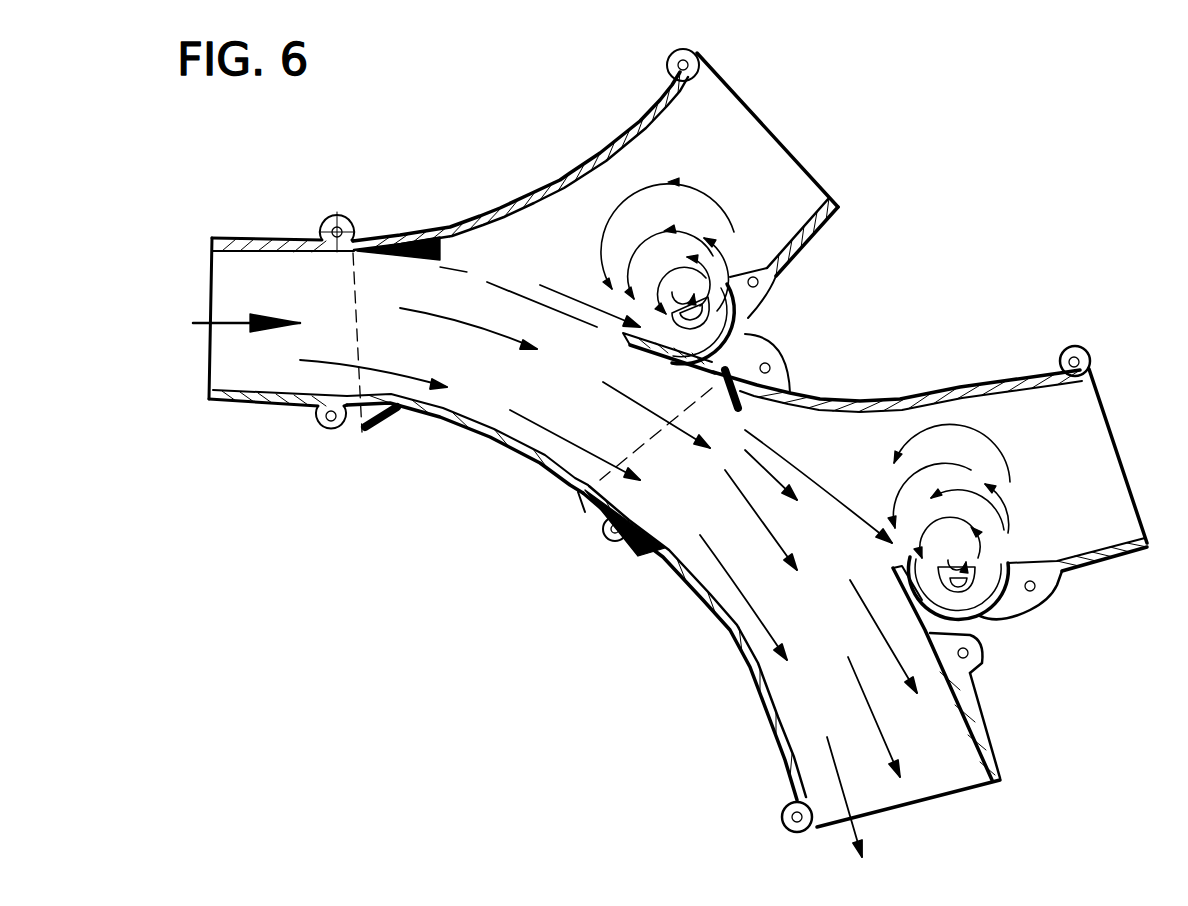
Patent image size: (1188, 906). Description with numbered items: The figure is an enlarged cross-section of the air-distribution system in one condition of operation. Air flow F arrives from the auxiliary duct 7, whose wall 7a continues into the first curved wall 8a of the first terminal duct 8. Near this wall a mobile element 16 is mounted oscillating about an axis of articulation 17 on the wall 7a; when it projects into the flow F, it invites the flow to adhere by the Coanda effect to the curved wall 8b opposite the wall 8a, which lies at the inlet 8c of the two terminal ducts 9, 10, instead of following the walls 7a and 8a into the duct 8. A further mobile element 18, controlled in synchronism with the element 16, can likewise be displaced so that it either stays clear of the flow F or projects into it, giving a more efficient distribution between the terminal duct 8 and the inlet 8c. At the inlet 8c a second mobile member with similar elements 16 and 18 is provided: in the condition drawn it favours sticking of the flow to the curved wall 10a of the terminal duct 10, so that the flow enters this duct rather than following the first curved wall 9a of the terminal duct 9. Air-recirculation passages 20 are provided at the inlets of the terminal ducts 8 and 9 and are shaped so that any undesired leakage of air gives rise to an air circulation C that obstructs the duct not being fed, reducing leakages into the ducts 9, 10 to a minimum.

The auxiliary duct 7 is at (243, 265).
The wall of the auxiliary duct 7a is at (302, 242).
The axis of articulation 17 is at (348, 222).
The mobile element 16 is at (448, 240).
The first curved wall 8a is at (592, 160).
The first terminal duct 8 is at (792, 210).
The air-recirculation passages 20 is at (745, 320).
The first curved wall of the terminal duct 9 9a is at (977, 387).
The further mobile element 18 is at (383, 423).
The terminal duct 9 is at (1093, 433).
The terminal duct 10 is at (952, 757).
The wall of the terminal duct 10 10a is at (752, 675).
The curved wall 8b is at (473, 433).
The inlet of the two terminal ducts 8c is at (597, 413).
The circulatory motion / air circulation C is at (662, 232).
The air flow F is at (246, 311).